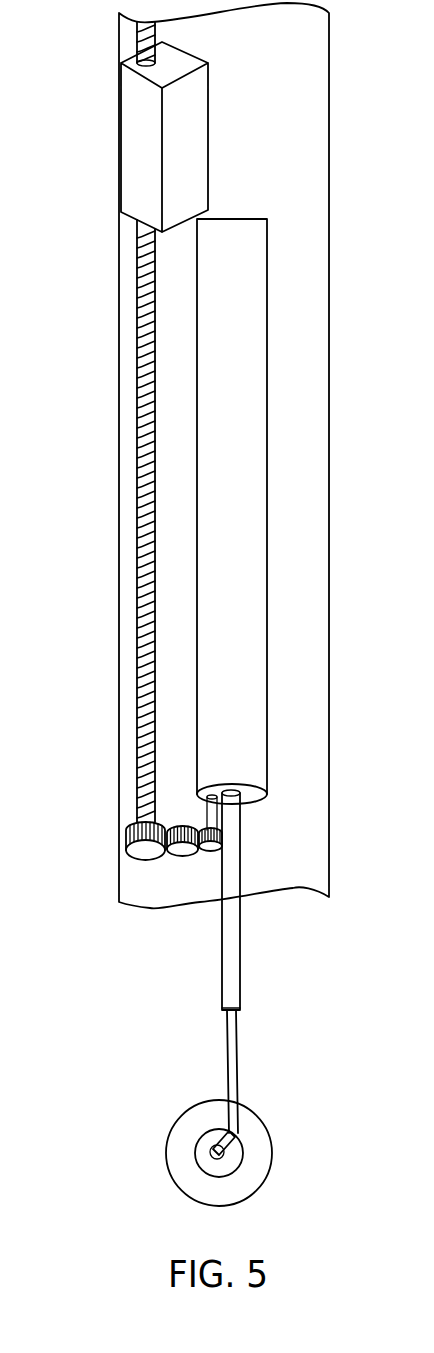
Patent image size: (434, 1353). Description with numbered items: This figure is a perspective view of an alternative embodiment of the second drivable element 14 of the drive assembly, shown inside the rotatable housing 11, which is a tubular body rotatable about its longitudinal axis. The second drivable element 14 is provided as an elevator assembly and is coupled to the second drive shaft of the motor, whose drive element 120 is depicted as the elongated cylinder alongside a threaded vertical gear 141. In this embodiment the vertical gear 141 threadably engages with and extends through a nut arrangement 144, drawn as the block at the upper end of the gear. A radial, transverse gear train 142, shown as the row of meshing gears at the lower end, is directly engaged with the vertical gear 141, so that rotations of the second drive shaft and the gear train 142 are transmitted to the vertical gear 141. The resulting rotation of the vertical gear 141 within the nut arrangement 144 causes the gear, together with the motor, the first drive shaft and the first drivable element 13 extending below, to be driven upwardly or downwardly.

The rotatable housing 11 is at (330, 630).
The first drivable element 13 is at (262, 972).
The second drivable element 14 is at (160, 912).
The drive element 120 is at (252, 715).
The vertical gear 141 is at (140, 715).
The radial, transverse gear train 142 is at (182, 848).
The nut arrangement 144 is at (128, 130).